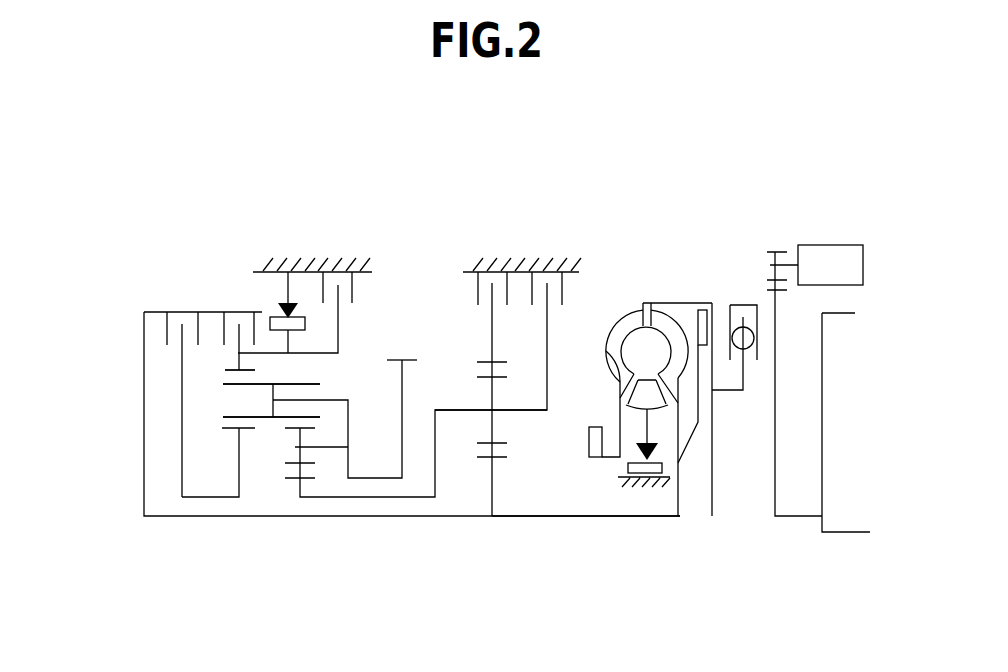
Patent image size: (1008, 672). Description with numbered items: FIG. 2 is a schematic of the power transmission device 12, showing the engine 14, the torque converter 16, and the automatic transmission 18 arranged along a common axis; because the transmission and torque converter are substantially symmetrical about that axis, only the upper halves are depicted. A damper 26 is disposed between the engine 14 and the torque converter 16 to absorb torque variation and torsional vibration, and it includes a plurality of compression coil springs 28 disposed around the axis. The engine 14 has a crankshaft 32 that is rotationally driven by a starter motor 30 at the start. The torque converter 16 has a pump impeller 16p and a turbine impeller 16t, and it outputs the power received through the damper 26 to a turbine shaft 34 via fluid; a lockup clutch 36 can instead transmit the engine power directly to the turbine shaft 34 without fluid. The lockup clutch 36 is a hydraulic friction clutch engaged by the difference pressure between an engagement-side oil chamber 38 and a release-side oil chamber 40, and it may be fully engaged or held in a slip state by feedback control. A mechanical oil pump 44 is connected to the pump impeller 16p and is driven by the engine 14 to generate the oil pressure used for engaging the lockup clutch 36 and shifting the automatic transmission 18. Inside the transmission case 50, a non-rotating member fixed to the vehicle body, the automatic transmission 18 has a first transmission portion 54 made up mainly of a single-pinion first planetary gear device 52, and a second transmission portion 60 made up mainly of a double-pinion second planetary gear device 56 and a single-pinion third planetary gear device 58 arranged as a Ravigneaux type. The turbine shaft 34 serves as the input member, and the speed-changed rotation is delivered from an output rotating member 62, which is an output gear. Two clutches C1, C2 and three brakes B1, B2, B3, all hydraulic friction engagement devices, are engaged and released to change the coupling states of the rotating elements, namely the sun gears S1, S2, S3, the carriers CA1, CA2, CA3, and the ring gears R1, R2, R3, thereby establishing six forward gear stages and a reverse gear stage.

The vehicle power transmission device 12 is at (740, 162).
The engine 14 is at (843, 517).
The torque converter 16 is at (628, 347).
The pump impeller 16p is at (609, 361).
The turbine impeller 16t is at (661, 320).
The automatic transmission 18 is at (305, 178).
The damper 26 is at (744, 265).
The compression coil springs 28 is at (747, 351).
The starter motor 30 is at (828, 257).
The crankshaft 32 is at (795, 517).
The turbine shaft 34 is at (582, 516).
The lockup clutch 36 is at (703, 327).
The engagement-side oil chamber 38 is at (680, 301).
The release-side oil chamber 40 is at (700, 482).
The mechanical oil pump 44 is at (593, 427).
The transmission case 50 is at (316, 262).
The first planetary gear device 52 is at (482, 552).
The first transmission portion 54 is at (467, 225).
The second planetary gear device 56 is at (289, 550).
The third planetary gear device 58 is at (226, 550).
The second transmission portion 60 is at (240, 225).
The output rotating member 62 is at (405, 357).
The brake B1 is at (565, 288).
The brake B2 is at (312, 312).
The brake B3 is at (477, 288).
The clutch C1 is at (203, 390).
The clutch C2 is at (238, 326).
The carrier CA1 is at (508, 412).
The carrier CA2 is at (312, 413).
The carrier CA3 is at (367, 403).
The ring gear R1 is at (483, 362).
The ring gear R2 is at (154, 387).
The ring gear R3 is at (225, 372).
The sun gear S1 is at (503, 449).
The sun gear S2 is at (292, 477).
The sun gear S3 is at (230, 426).